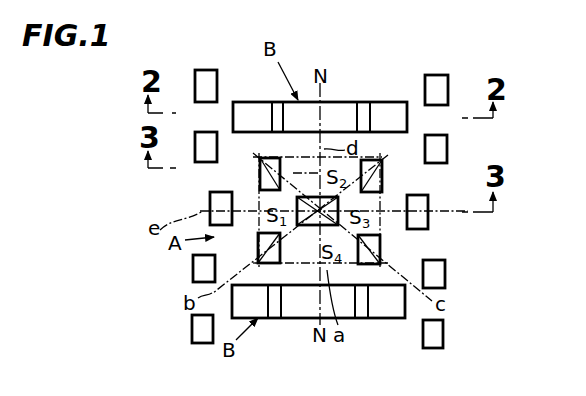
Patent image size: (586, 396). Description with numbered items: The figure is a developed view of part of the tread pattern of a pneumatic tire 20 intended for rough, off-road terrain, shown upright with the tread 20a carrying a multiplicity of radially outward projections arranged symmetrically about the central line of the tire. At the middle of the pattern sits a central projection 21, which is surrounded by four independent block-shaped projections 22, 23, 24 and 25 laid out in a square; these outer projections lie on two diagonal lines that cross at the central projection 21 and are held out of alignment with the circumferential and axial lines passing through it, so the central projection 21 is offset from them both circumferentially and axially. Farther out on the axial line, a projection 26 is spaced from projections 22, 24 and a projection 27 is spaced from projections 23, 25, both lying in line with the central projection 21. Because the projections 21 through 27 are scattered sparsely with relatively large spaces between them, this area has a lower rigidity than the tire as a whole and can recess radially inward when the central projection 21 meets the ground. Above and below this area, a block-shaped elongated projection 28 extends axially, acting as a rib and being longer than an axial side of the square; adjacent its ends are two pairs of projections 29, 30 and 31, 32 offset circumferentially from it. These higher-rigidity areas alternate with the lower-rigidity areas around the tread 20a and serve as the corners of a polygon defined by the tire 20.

The pneumatic tire 20 is at (472, 243).
The tread 20a is at (198, 180).
The central projection 21 is at (311, 227).
The block-shaped projection 22 is at (260, 174).
The block-shaped projection 23 is at (383, 176).
The block-shaped projection 24 is at (259, 246).
The block-shaped projection 25 is at (380, 249).
The projection 26 is at (210, 207).
The projection 27 is at (428, 217).
The elongated projection 28 is at (338, 108).
The projection 29 is at (205, 70).
The projection 30 is at (206, 132).
The projection 31 is at (437, 75).
The projection 32 is at (447, 145).